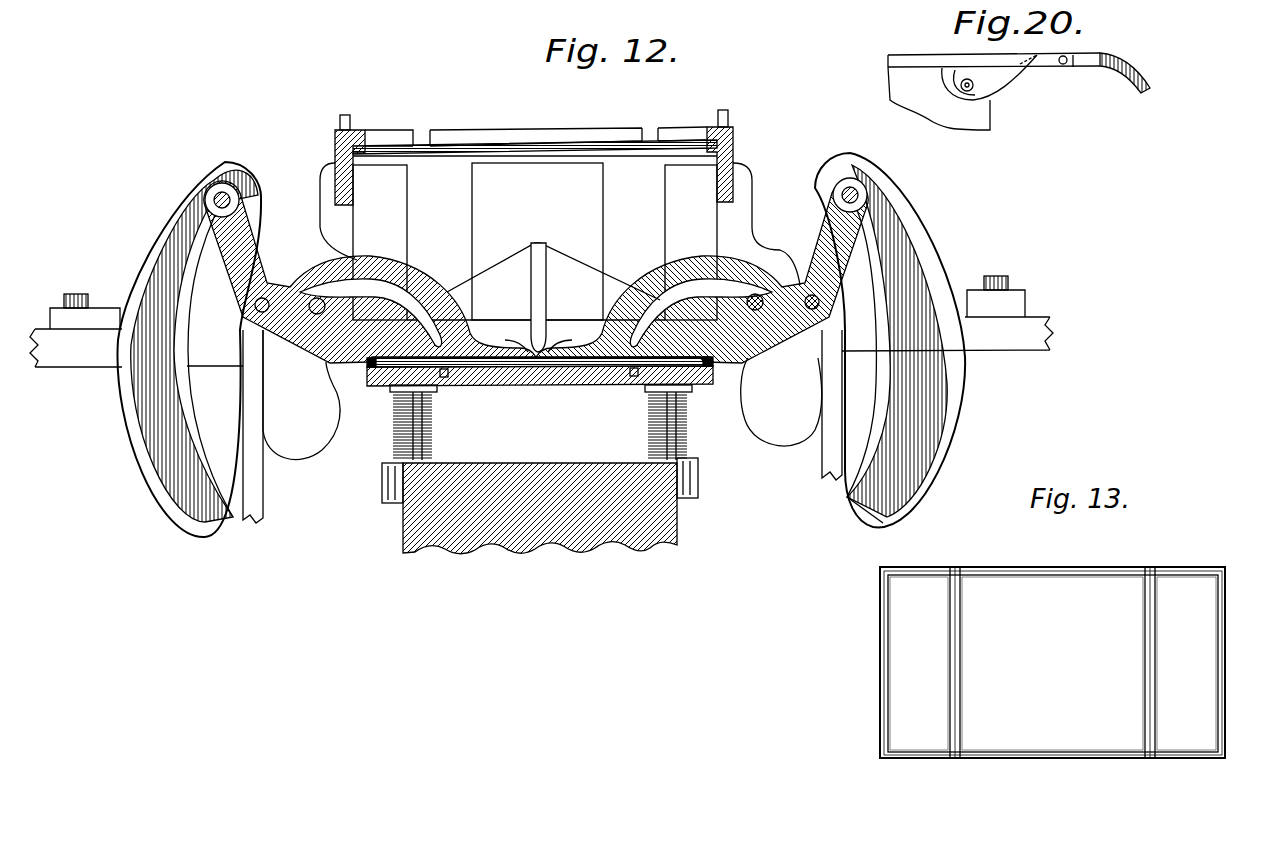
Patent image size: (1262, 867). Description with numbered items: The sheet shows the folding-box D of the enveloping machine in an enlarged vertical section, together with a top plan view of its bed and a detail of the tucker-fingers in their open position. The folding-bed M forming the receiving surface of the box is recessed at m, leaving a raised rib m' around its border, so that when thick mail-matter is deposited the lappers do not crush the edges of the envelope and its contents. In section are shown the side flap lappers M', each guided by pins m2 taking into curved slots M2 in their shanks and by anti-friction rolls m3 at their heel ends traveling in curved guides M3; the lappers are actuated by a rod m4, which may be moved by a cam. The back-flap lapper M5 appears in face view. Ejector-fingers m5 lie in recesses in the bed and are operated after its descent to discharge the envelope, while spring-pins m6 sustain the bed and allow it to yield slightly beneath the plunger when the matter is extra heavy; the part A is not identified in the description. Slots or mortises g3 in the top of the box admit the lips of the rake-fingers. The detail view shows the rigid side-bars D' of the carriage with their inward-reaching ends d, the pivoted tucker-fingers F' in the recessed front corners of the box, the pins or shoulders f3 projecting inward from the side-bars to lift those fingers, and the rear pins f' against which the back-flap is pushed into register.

In FIG. 12, the shaft A is at (1008, 346).
In FIG. 12, the folding-box D is at (560, 238).
In FIG. 20, the folding-box D is at (939, 98).
In FIG. 20, the rigid arms or side-bars D' is at (994, 51).
In FIG. 20, the tucker-fingers F' is at (989, 77).
In FIG. 12, the pins f' is at (534, 144).
In FIG. 20, the pins or shoulders f3 is at (1062, 66).
In FIG. 12, the slots, notches or mortises g3 is at (424, 128).
In FIG. 20, the inward-reaching ends of side-bars d is at (1125, 69).
In FIG. 12, the folding-bed M is at (540, 394).
In FIG. 13, the folding-bed M is at (1052, 663).
In FIG. 12, the side flap lappers M' is at (542, 395).
In FIG. 12, the curved slots M2 is at (400, 292).
In FIG. 12, the curved guides M3 is at (150, 268).
In FIG. 12, the back-flap lapper M5 is at (553, 297).
In FIG. 12, the recess m is at (540, 390).
In FIG. 13, the recess m is at (1053, 663).
In FIG. 12, the raised edges or raised rib m' is at (537, 370).
In FIG. 13, the raised edges or raised rib m' is at (1043, 663).
In FIG. 12, the pins m2 is at (536, 296).
In FIG. 12, the anti-friction rolls m3 is at (228, 186).
In FIG. 12, the rod m4 is at (250, 488).
In FIG. 12, the ejector-fingers m5 is at (444, 380).
In FIG. 13, the ejector-fingers m5 is at (960, 708).
In FIG. 12, the spring-pins m6 is at (395, 430).